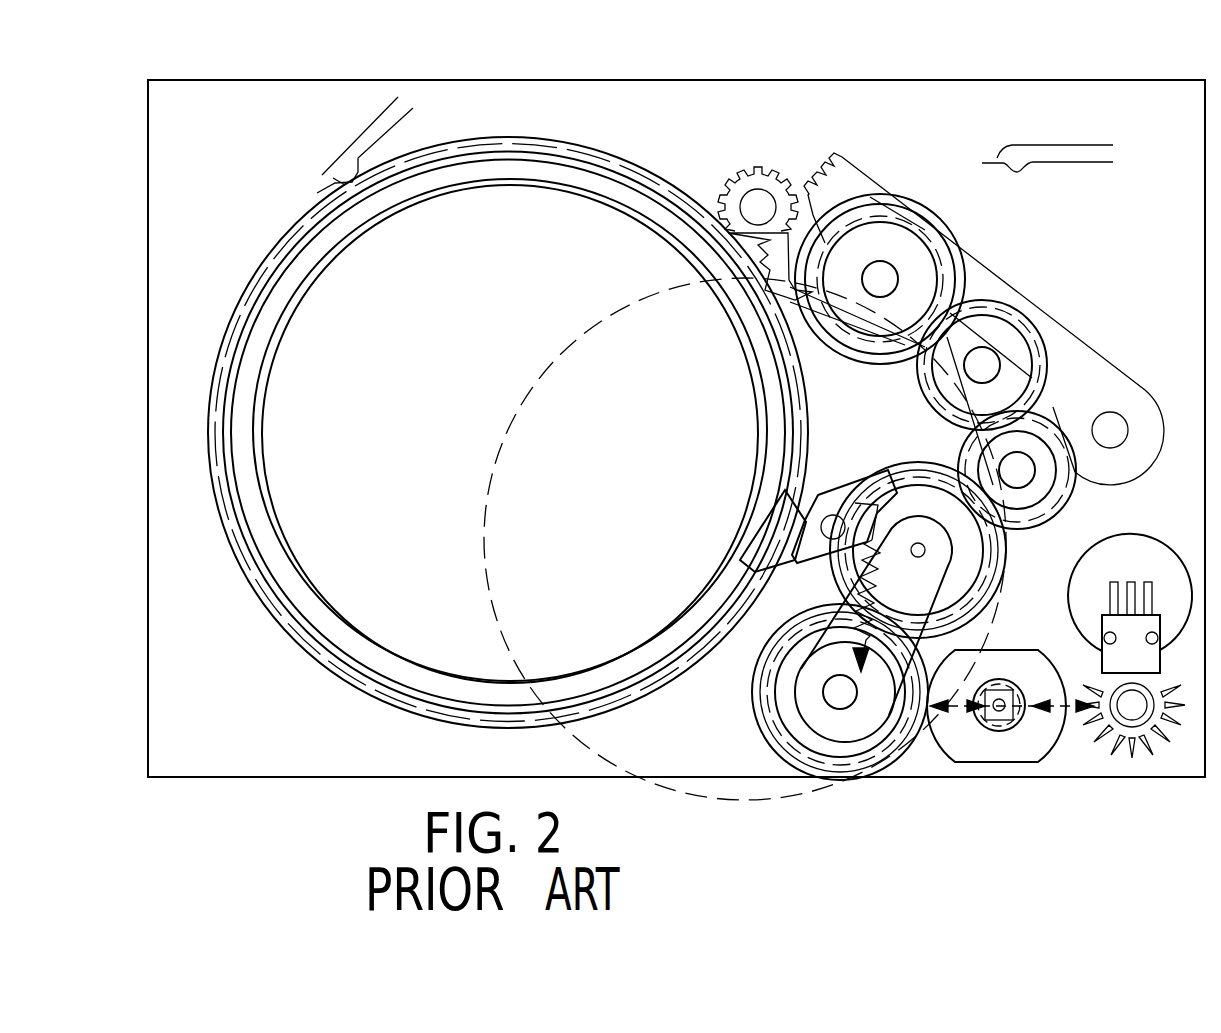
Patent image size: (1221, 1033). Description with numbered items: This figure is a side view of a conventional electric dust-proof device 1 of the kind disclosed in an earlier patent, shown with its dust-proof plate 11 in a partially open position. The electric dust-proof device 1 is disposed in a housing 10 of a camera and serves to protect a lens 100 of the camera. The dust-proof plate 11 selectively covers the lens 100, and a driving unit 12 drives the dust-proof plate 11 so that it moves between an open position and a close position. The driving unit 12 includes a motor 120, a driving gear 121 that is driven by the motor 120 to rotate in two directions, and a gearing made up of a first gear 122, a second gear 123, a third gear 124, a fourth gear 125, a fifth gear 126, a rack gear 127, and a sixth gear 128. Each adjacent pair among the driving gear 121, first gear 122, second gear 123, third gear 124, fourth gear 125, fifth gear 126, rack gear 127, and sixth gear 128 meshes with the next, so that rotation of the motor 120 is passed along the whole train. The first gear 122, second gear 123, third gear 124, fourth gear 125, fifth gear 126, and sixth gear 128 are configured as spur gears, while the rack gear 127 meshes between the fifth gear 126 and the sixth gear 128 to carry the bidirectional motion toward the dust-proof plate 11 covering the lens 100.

The electric dust-proof device 1 is at (850, 105).
The housing 10 is at (222, 80).
The lens 100 is at (280, 448).
The dust-proof plate 11 is at (637, 300).
The driving unit 12 is at (1035, 592).
The motor 120 is at (1028, 760).
The driving gear 121 is at (998, 727).
The first gear 122 is at (812, 773).
The second gear 123 is at (800, 652).
The third gear 124 is at (1073, 507).
The fourth gear 125 is at (1048, 350).
The fifth gear 126 is at (950, 223).
The rack gear 127 is at (1032, 302).
The sixth gear 128 is at (752, 167).